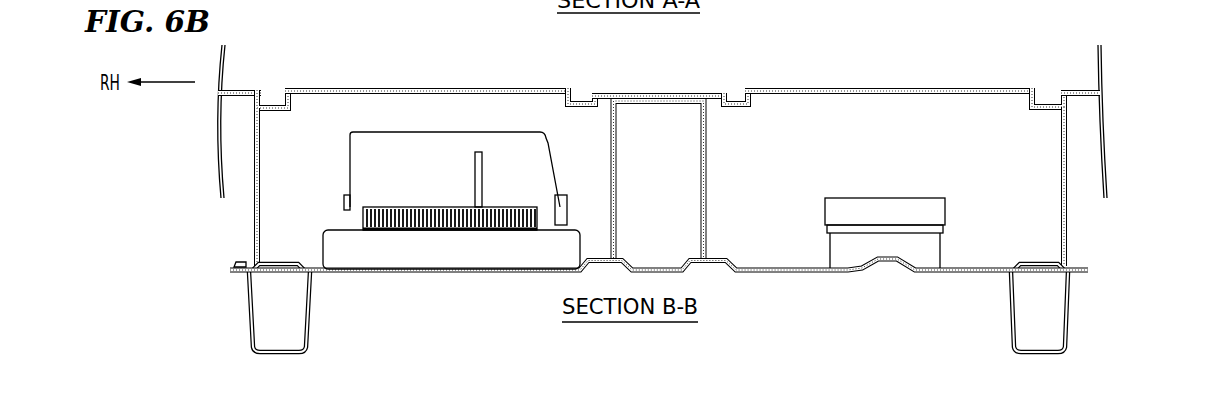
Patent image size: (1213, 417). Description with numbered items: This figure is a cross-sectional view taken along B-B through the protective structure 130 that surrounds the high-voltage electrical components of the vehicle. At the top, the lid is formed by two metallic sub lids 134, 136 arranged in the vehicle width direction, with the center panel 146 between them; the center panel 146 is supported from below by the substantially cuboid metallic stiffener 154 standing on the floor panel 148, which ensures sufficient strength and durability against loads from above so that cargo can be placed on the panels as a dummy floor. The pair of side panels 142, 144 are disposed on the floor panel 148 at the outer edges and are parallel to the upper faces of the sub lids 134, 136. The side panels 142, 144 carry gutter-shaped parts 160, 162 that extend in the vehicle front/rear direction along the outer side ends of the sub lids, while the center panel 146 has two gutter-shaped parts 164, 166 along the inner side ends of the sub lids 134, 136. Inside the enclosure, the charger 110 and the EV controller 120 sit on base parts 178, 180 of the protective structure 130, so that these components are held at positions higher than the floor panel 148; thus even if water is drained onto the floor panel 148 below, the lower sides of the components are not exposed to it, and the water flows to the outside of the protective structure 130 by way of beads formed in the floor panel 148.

The side panel 142 is at (246, 89).
The sub lid 134 is at (437, 87).
The center panel 146 is at (709, 93).
The sub lid 136 is at (903, 87).
The side panel 144 is at (1084, 90).
The gutter-shaped part 160 is at (291, 98).
The gutter-shaped part 164 is at (566, 103).
The gutter-shaped part 166 is at (752, 104).
The gutter-shaped part 162 is at (1030, 108).
The charger 110 is at (349, 140).
The stiffener 154 is at (708, 150).
The EV controller 120 is at (921, 197).
The base part 178 is at (323, 243).
The base part 180 is at (833, 242).
The floor panel 148 is at (776, 273).
The protective structure 130 is at (1117, 277).